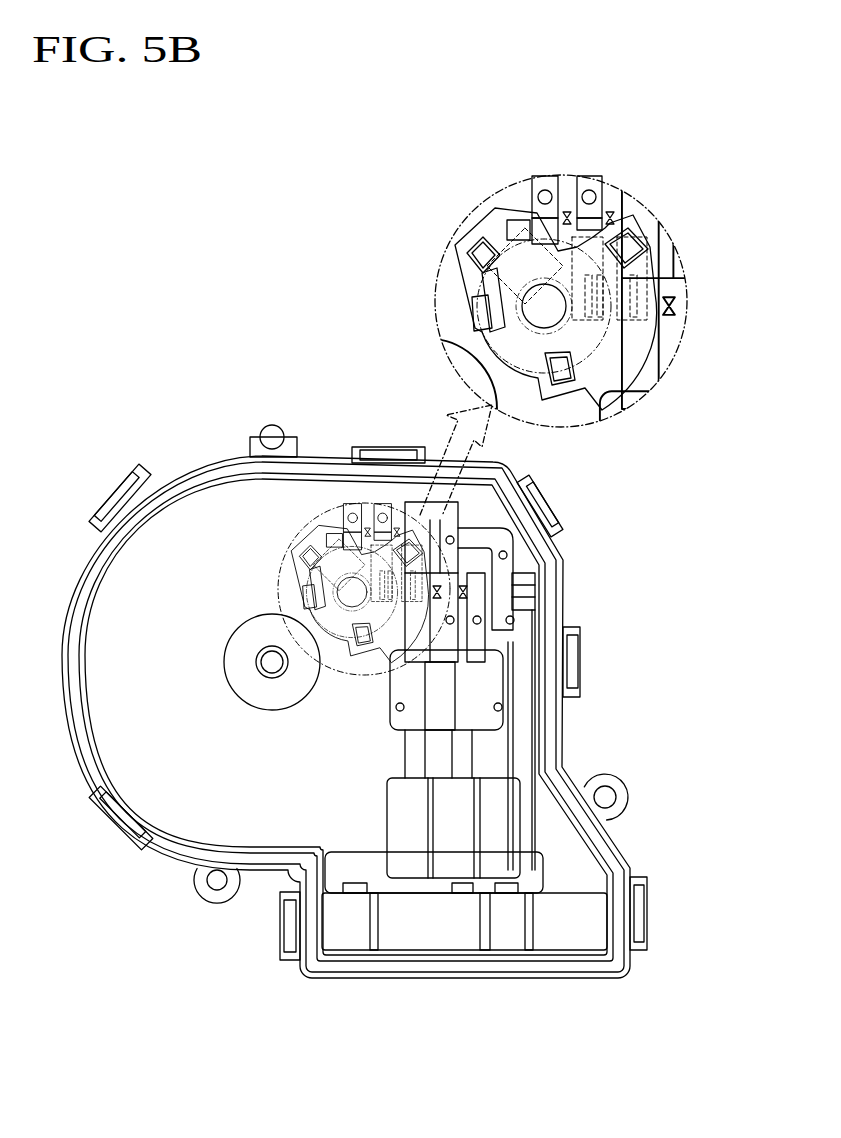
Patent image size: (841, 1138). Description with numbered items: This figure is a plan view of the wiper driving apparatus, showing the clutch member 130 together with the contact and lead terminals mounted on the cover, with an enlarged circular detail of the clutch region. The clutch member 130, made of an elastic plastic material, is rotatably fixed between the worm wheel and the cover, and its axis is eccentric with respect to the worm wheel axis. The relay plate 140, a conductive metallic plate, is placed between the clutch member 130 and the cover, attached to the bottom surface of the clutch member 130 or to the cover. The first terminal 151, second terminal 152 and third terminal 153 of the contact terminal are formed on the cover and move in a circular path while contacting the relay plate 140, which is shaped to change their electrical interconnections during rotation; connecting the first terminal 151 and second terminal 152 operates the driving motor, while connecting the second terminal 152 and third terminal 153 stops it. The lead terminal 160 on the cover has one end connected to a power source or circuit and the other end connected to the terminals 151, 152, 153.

The clutch member 130 is at (417, 625).
The relay plate 140 is at (580, 347).
The first terminal 151 is at (512, 268).
The second terminal 152 is at (595, 297).
The third terminal 153 is at (643, 270).
The lead terminal 160 is at (420, 512).